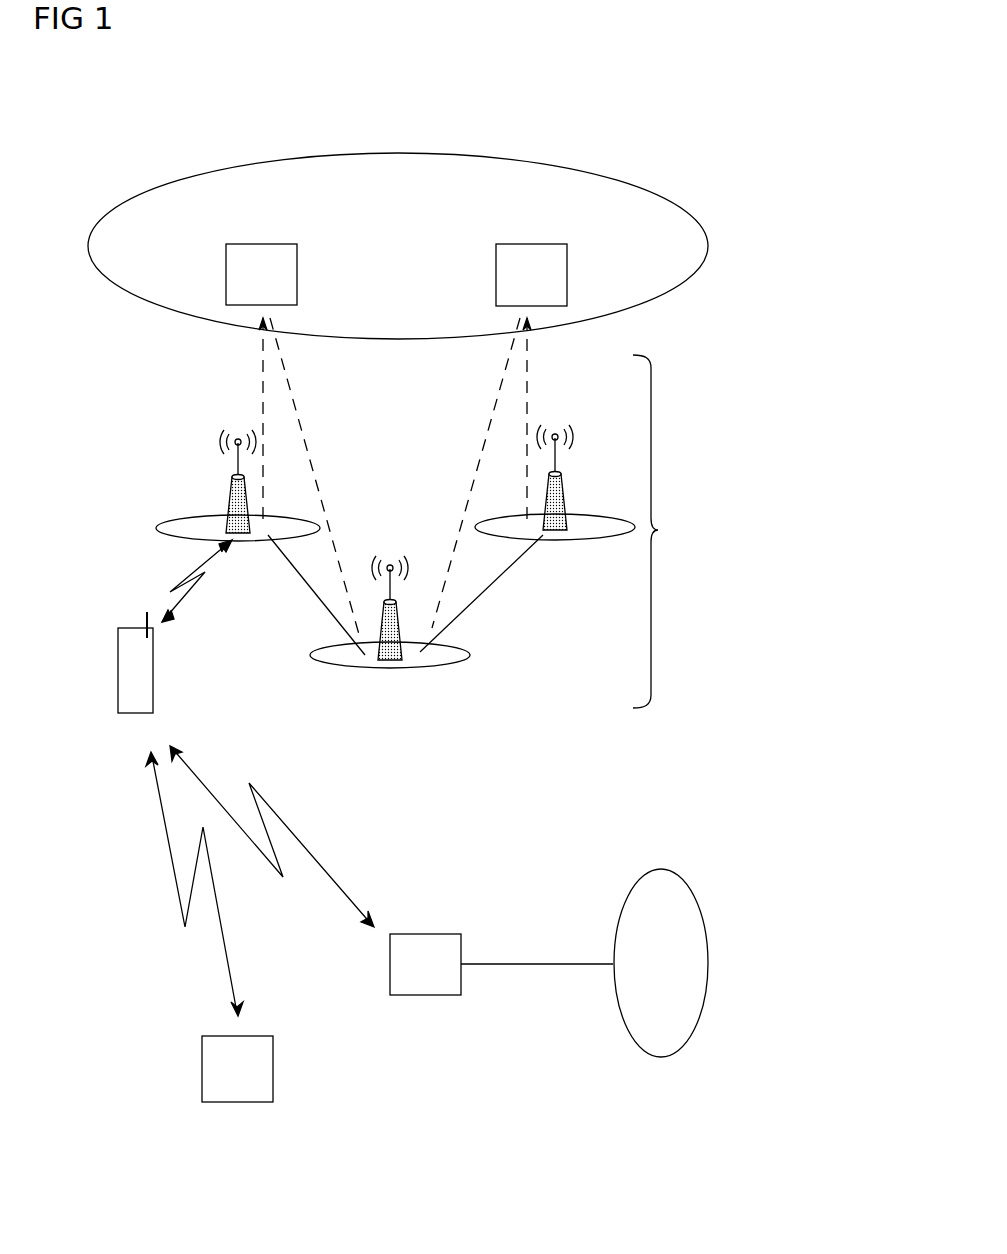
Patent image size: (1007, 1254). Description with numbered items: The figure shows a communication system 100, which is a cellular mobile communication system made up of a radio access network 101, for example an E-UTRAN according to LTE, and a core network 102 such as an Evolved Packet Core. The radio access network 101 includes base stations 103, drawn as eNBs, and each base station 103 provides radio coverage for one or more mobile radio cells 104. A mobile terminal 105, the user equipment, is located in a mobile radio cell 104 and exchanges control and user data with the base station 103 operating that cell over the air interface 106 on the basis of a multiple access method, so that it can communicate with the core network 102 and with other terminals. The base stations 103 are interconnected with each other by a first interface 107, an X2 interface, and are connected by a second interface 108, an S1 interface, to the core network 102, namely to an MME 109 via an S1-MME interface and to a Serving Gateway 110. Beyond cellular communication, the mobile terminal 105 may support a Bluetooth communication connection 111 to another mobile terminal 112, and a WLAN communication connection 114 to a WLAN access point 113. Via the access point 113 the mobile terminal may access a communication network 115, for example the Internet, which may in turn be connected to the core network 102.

The communication system 100 is at (683, 86).
The radio access network 101 is at (744, 510).
The core network 102 is at (700, 212).
The base station 103 is at (226, 486).
The mobile radio cell 104 is at (172, 535).
The mobile terminal 105 is at (138, 715).
The air interface 106 is at (190, 594).
The first interface 107 is at (390, 506).
The second interface 108 is at (264, 370).
The MME 109 is at (262, 244).
The Serving Gateway 110 is at (530, 244).
The Bluetooth communication connection 111 is at (176, 872).
The another mobile terminal 112 is at (262, 1036).
The WLAN access point 113 is at (450, 934).
The WLAN communication connection 114 is at (302, 845).
The communication network 115 is at (661, 870).